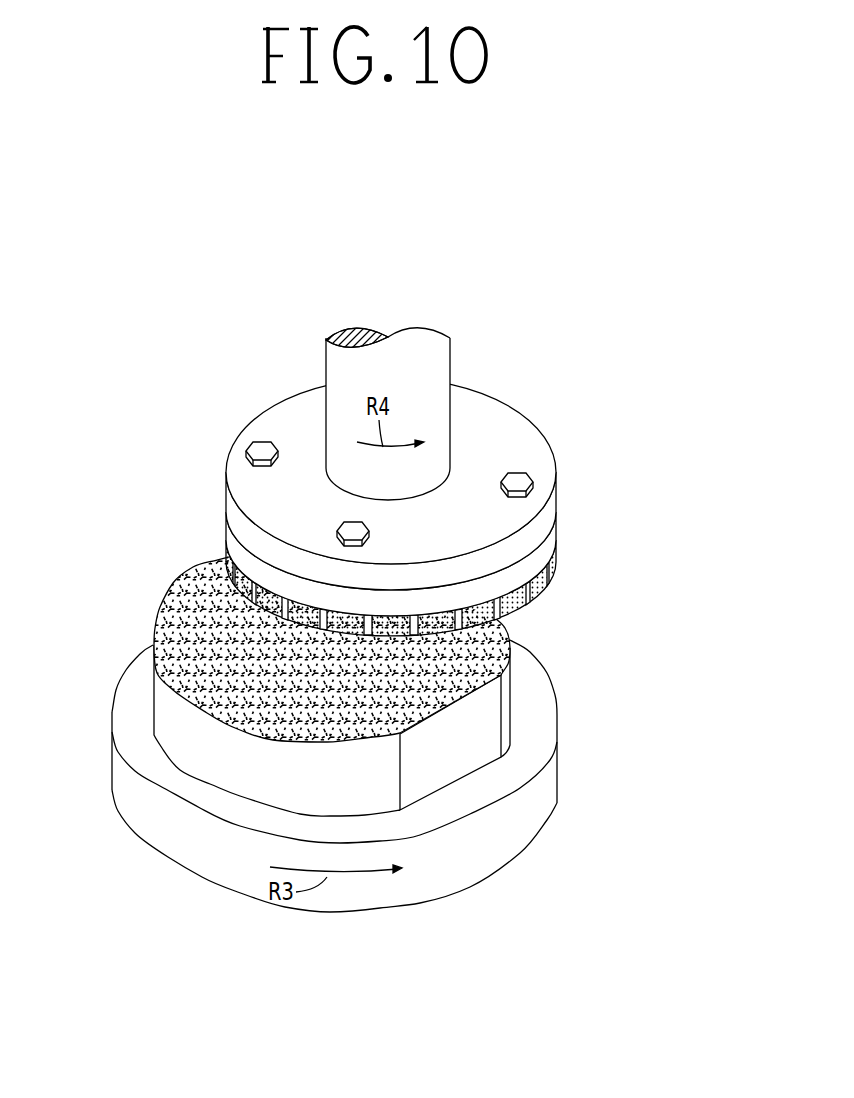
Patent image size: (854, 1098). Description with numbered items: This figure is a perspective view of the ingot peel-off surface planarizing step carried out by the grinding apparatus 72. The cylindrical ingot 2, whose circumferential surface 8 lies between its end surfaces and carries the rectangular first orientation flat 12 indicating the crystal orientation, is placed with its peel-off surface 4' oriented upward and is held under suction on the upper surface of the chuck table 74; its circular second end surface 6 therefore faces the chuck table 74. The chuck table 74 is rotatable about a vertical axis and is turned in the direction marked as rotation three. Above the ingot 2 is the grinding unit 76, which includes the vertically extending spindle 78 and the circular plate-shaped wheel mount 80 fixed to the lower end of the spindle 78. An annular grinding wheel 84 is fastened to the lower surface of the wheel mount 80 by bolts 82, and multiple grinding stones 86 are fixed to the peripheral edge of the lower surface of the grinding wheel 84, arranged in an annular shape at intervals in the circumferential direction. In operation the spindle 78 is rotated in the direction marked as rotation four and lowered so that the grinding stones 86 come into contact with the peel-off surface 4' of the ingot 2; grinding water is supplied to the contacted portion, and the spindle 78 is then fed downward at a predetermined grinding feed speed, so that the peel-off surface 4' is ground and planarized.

The ingot 2 is at (297, 616).
The peel-off surface 4' is at (297, 649).
The second end surface 6 is at (150, 747).
The circumferential surface 8 is at (381, 788).
The first orientation flat 12 is at (447, 752).
The grinding apparatus 72 is at (477, 553).
The chuck table 74 is at (537, 728).
The grinding unit 76 is at (453, 507).
The spindle 78 is at (433, 370).
The wheel mount 80 is at (415, 484).
The bolts 82 is at (533, 478).
The grinding wheel 84 is at (566, 540).
The grinding stones 86 is at (520, 603).